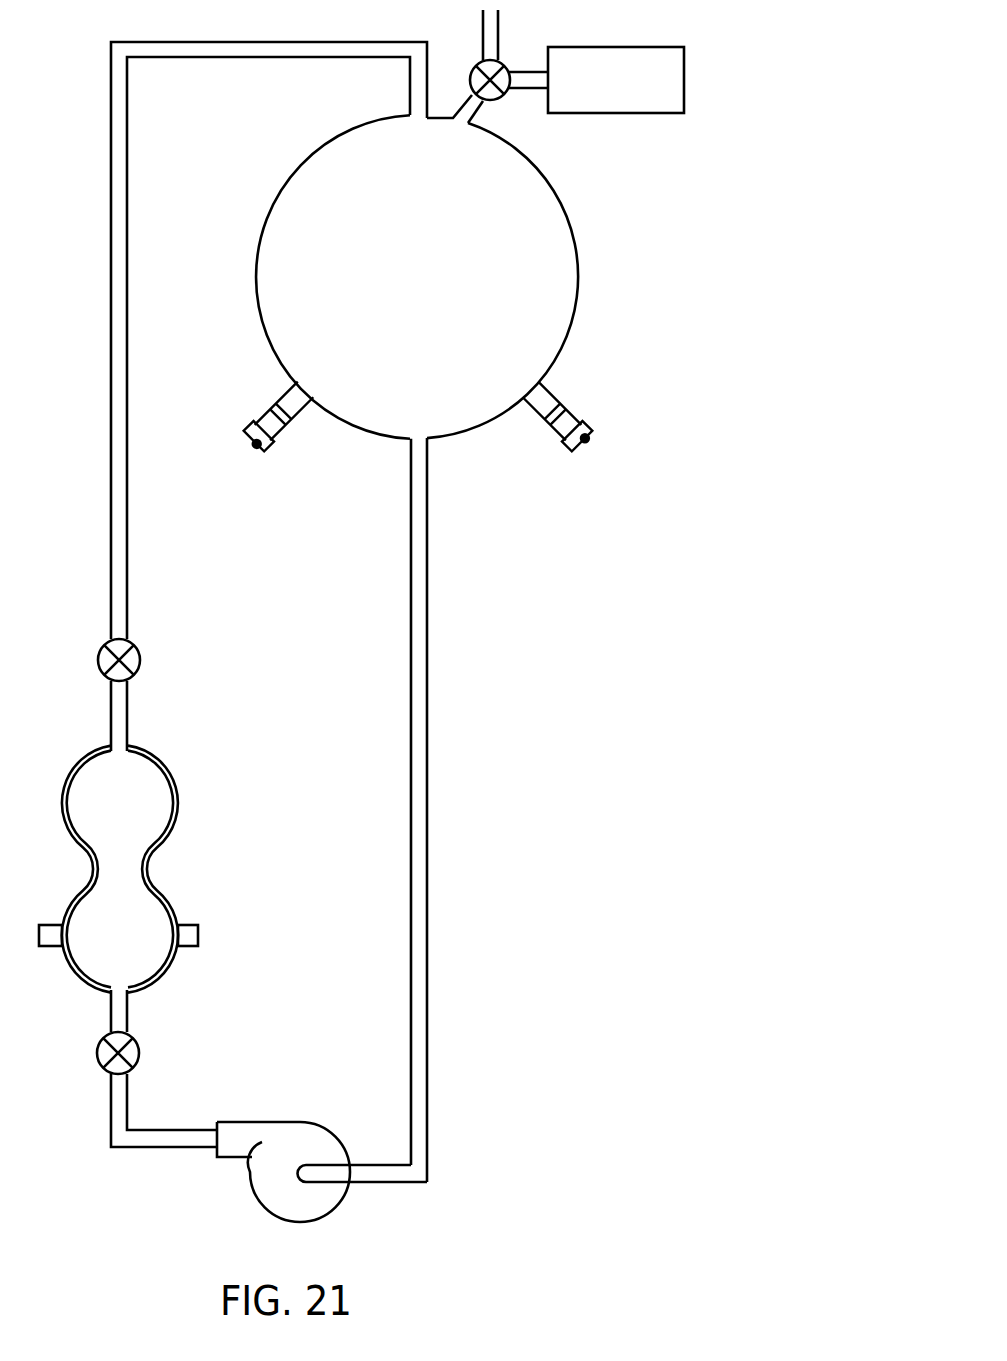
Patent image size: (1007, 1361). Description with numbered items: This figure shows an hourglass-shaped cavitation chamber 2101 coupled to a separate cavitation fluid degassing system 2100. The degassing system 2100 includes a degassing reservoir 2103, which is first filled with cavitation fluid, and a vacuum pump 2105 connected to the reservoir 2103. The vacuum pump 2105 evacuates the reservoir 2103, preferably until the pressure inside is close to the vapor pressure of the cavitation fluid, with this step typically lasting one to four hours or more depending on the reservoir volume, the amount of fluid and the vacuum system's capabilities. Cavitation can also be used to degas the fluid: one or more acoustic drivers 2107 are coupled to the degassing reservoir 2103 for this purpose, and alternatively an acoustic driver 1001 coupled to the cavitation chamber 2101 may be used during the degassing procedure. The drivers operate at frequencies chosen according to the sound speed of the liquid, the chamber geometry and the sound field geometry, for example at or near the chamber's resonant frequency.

The degassing system 2100 is at (460, 930).
The cavitation chamber 2101 is at (146, 800).
The degassing reservoir 2103 is at (585, 267).
The vacuum pump 2105 is at (592, 47).
The acoustic drivers 2107 is at (270, 445).
The driver 1001 is at (198, 936).